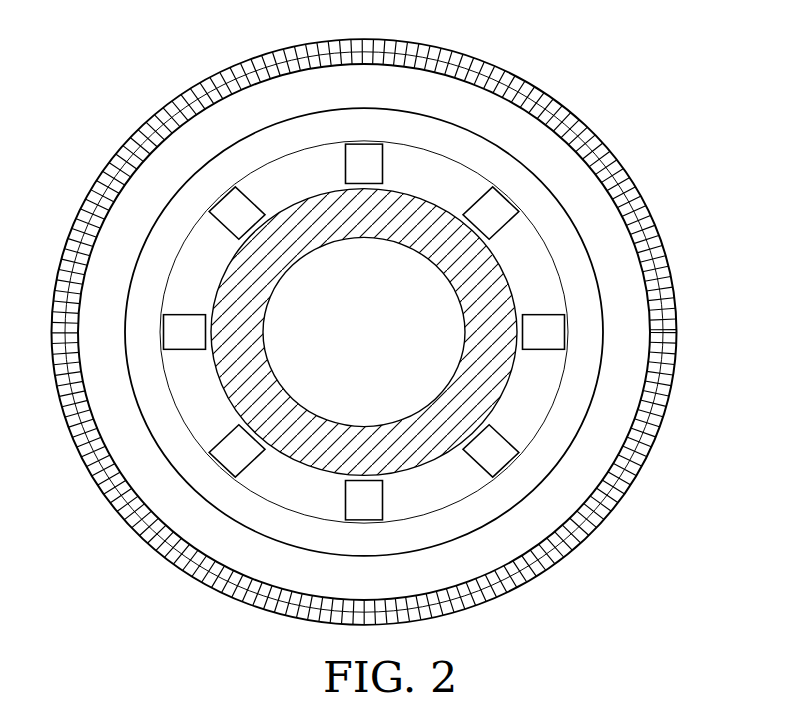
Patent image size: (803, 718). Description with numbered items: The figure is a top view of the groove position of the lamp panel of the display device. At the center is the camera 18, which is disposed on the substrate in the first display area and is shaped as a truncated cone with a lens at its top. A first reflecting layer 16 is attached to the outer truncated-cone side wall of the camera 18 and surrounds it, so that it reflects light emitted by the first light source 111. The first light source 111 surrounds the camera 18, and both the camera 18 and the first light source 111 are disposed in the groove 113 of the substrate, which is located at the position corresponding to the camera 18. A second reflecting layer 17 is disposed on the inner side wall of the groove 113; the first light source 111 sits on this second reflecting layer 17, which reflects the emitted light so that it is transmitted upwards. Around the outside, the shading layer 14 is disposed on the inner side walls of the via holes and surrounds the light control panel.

The shading layer 14 is at (533, 100).
The second reflecting layer 17 is at (533, 198).
The groove 113 is at (536, 271).
The first reflecting layer 16 is at (378, 380).
The first light source 111 is at (497, 453).
The camera 18 is at (308, 342).